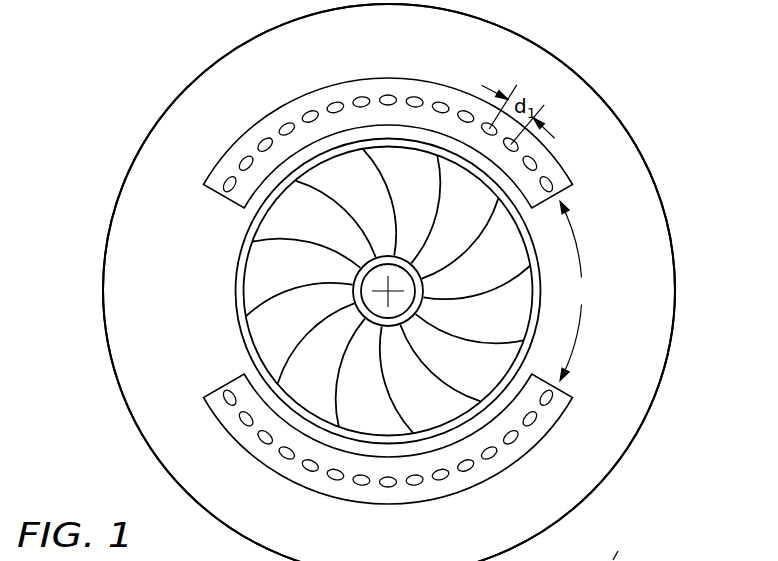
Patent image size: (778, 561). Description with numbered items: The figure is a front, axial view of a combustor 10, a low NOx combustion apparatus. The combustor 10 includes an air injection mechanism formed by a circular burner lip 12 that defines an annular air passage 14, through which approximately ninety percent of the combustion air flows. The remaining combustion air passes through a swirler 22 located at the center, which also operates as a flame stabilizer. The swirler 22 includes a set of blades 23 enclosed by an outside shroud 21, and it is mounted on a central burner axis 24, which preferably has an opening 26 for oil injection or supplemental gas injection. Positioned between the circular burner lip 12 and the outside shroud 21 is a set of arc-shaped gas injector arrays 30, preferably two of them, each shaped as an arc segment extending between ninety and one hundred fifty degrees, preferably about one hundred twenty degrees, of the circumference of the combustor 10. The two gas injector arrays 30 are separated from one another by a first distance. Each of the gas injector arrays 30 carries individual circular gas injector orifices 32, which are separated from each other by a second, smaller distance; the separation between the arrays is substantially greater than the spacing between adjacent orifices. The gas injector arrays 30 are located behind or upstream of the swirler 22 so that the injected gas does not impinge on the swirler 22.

The combustor 10 is at (625, 42).
The circular burner lip 12 is at (643, 157).
The annular air passage 14 is at (619, 244).
The outside shroud 21 is at (243, 293).
The swirler 22 is at (548, 323).
The blades 23 is at (268, 255).
The central burner axis 24 is at (406, 265).
The opening 26 is at (404, 299).
The gas injector arrays 30 is at (300, 98).
The circular gas injector orifices 32 is at (415, 98).